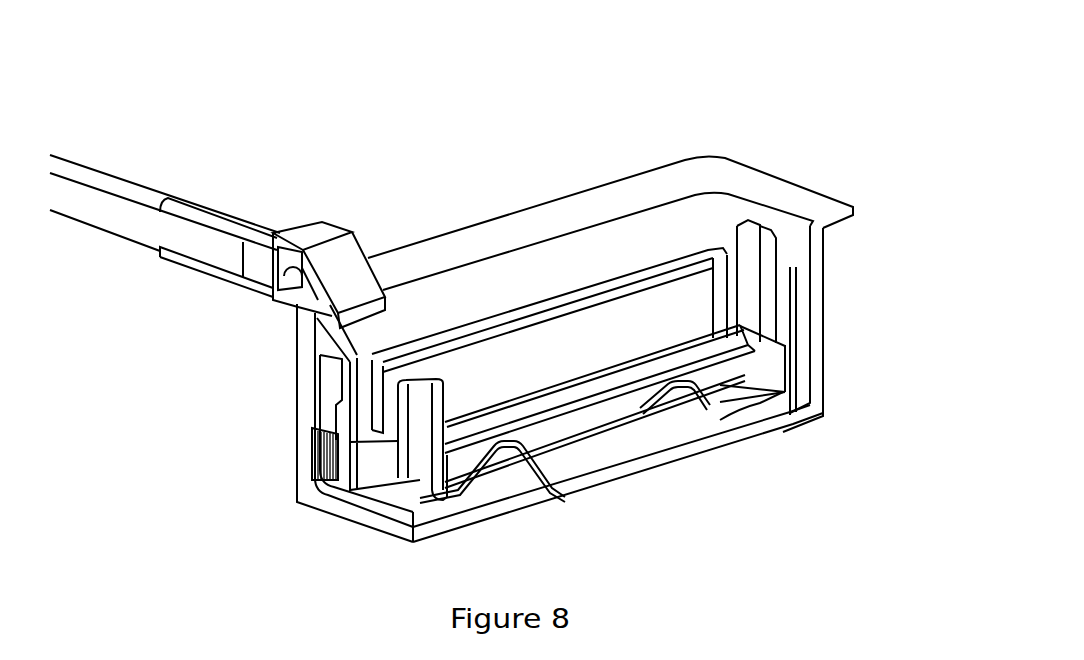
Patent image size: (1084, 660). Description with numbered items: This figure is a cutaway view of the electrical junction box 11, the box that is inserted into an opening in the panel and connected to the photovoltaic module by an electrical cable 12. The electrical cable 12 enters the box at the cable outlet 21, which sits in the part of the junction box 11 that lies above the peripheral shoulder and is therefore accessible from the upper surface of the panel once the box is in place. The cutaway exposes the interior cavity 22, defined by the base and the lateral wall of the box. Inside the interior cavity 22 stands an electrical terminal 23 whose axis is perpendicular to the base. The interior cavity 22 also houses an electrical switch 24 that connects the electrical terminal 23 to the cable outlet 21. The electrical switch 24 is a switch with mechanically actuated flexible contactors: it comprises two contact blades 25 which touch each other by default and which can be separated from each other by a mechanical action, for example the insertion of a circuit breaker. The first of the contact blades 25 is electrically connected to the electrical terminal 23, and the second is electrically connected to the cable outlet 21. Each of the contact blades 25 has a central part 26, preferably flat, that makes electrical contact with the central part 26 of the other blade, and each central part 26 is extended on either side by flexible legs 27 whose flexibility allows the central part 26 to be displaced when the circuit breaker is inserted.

The junction box 11 is at (467, 155).
The electrical cable 12 is at (97, 180).
The cable outlet 21 is at (333, 228).
The interior cavity 22 is at (672, 237).
The electrical terminal 23 is at (418, 392).
The electrical switch 24 is at (570, 454).
The contact blades 25 is at (713, 374).
The central part 26 is at (600, 442).
The flexible legs 27 is at (693, 443).